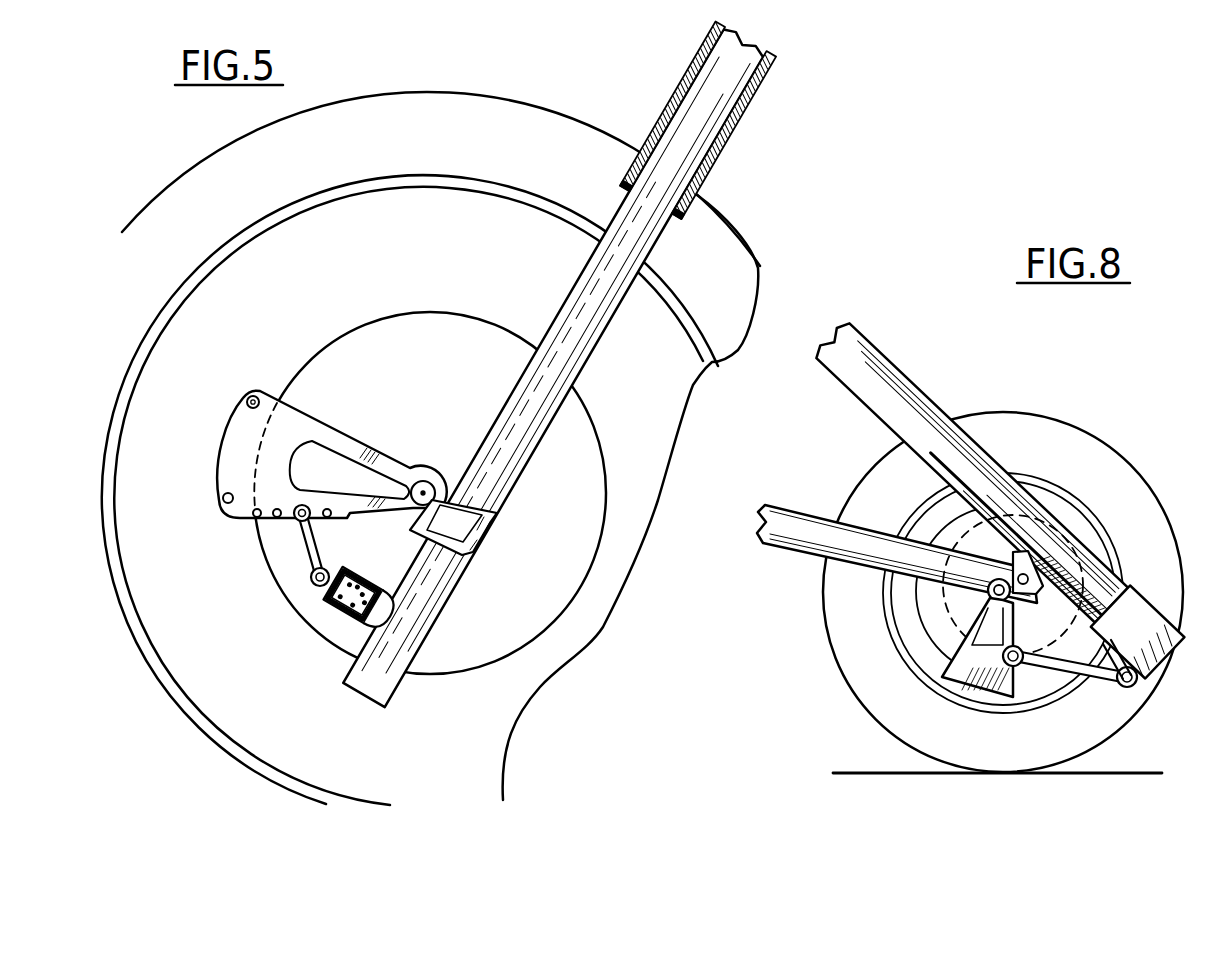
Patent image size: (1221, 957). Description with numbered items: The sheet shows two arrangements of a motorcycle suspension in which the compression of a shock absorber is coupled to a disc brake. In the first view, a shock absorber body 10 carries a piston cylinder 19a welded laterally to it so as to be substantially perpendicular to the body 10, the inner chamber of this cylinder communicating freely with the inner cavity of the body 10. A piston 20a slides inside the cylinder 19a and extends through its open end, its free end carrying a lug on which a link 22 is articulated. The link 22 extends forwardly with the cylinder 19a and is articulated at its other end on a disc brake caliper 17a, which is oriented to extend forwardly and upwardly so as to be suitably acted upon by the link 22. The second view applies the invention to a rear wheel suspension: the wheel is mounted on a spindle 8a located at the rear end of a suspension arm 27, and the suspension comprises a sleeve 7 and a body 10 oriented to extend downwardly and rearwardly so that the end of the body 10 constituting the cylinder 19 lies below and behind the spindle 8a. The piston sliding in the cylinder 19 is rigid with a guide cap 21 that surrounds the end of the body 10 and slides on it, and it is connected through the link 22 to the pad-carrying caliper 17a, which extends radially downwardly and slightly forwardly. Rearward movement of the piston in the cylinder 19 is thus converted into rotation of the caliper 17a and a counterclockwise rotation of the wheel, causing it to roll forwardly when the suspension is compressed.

In FIG. 5, the sleeve 7 is at (742, 92).
In FIG. 8, the sleeve 7 is at (930, 410).
In FIG. 5, the body 10 is at (590, 283).
In FIG. 8, the body 10 is at (1038, 524).
In FIG. 5, the caliper 17a is at (253, 395).
In FIG. 8, the caliper 17a is at (980, 690).
In FIG. 5, the piston cylinder 19a is at (365, 578).
In FIG. 5, the piston 20a is at (323, 600).
In FIG. 5, the link 22 is at (305, 537).
In FIG. 8, the link 22 is at (1065, 668).
In FIG. 8, the suspension arm 27 is at (793, 530).
In FIG. 8, the spindle 8a is at (988, 589).
In FIG. 8, the cylinder 19 is at (1105, 605).
In FIG. 8, the guide cap 21 is at (1160, 650).